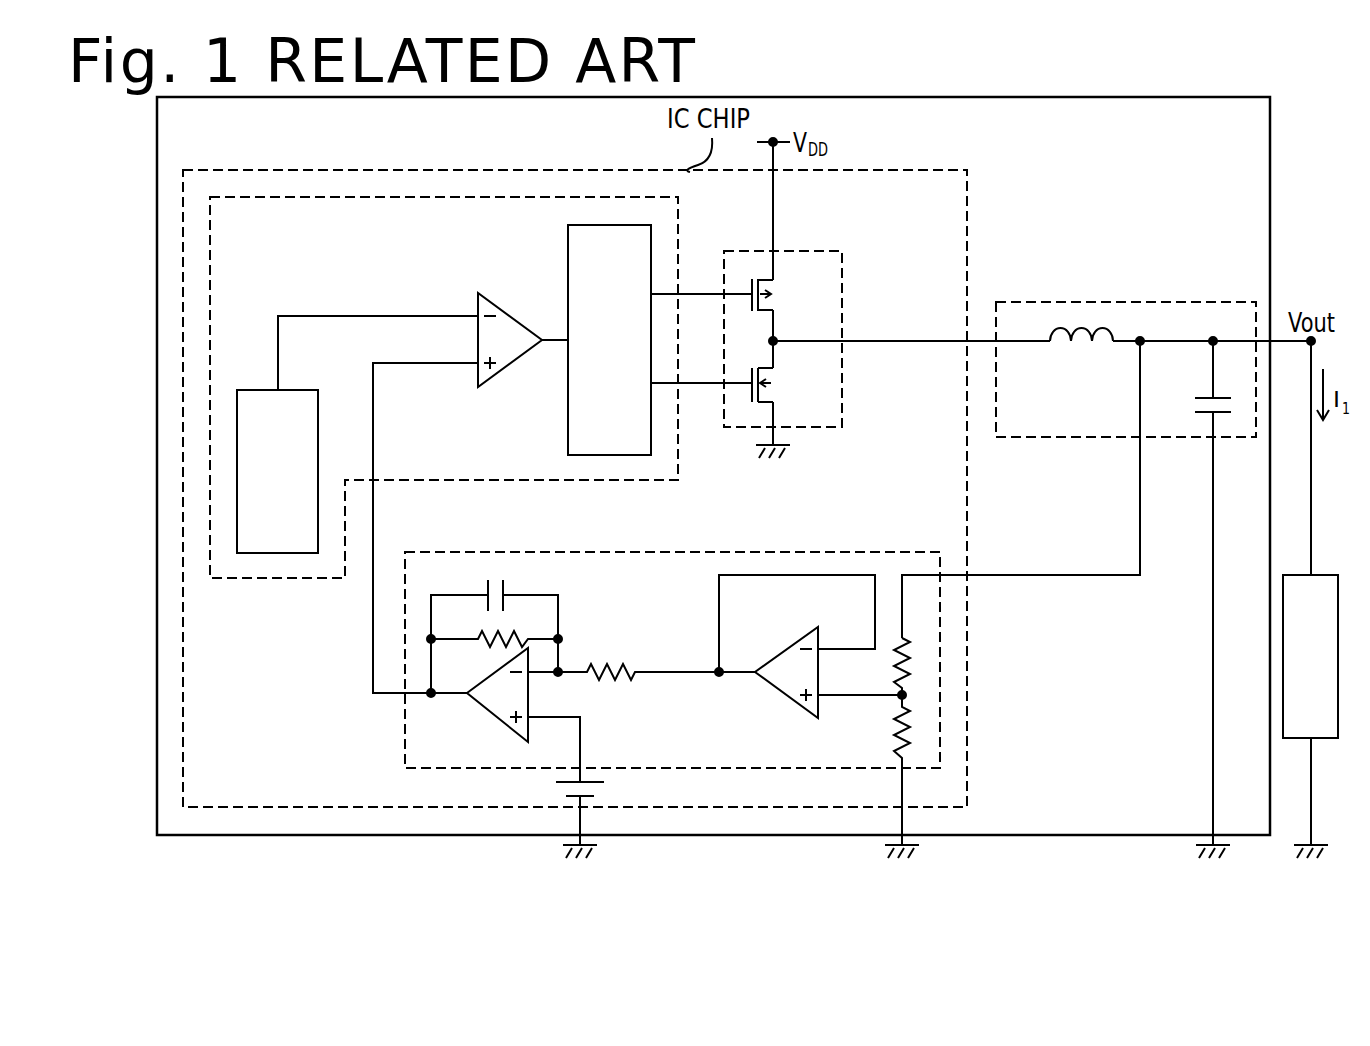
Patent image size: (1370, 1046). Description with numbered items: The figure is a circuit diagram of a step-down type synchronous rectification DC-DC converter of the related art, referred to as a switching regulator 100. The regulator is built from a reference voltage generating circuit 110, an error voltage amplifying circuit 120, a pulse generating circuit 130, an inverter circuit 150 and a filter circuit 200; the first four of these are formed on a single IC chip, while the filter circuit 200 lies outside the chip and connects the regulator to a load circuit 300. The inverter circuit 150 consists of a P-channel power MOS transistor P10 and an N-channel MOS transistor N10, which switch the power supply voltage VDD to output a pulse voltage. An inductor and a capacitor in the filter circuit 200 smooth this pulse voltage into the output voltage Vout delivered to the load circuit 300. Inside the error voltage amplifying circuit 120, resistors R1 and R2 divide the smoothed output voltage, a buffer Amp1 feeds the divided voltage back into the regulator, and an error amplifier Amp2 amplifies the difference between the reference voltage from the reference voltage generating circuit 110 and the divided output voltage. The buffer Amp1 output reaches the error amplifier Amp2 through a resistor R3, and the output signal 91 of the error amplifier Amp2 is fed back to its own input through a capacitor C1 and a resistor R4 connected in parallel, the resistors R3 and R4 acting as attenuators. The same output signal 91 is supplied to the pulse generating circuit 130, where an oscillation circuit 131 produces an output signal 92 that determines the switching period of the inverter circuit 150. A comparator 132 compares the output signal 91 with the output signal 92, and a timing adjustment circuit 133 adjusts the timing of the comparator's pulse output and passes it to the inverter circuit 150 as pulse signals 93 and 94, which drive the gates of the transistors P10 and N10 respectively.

The switching regulator 100 is at (1270, 200).
The reference voltage generating circuit 110 is at (598, 786).
The error voltage amplifying circuit 120 is at (430, 552).
The pulse generating circuit 130 is at (250, 195).
The oscillation circuit 131 is at (258, 390).
The comparator 132 is at (478, 300).
The timing adjustment circuit 133 is at (603, 225).
The inverter circuit 150 is at (842, 302).
The filter circuit 200 is at (1022, 302).
The load circuit 300 is at (1312, 575).
The output signal of the error amplifier 91 is at (417, 363).
The output signal of the oscillation circuit 92 is at (362, 316).
The pulse signal 93 is at (710, 294).
The pulse signal 94 is at (703, 383).
The P-channel power MOS transistor P10 is at (783, 295).
The N-channel MOS transistor N10 is at (785, 385).
The resistor R1 is at (886, 666).
The resistor R2 is at (891, 776).
The resistor R3 is at (603, 662).
The resistor R4 is at (515, 640).
The capacitor C1 is at (485, 602).
The buffer Amp1 is at (782, 697).
The error amplifier Amp2 is at (493, 718).